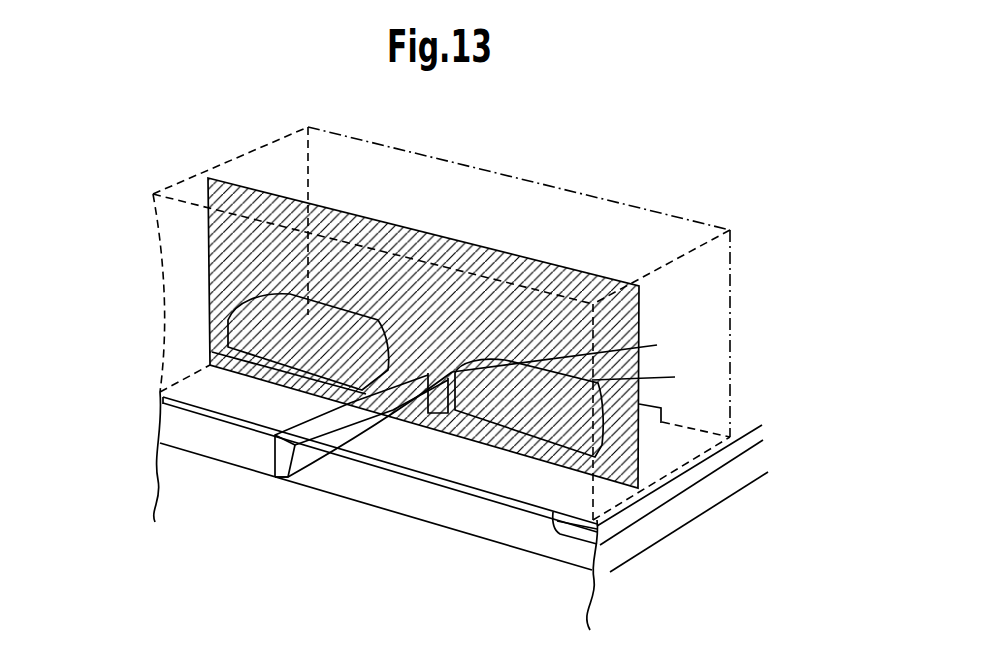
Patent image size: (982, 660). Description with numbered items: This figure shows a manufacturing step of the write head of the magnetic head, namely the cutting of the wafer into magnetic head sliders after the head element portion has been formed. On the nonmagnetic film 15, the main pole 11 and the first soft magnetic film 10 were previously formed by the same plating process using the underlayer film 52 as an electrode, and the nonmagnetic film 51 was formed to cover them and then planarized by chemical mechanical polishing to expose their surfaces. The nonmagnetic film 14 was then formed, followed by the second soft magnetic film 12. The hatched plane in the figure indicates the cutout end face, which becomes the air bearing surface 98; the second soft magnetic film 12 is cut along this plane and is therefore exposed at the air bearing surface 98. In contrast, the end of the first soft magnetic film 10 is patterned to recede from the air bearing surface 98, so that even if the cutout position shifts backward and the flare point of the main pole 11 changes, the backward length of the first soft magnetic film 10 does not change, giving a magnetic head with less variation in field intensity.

The first soft magnetic film 10 is at (237, 307).
The main pole 11 is at (283, 452).
The second soft magnetic film 12 is at (705, 300).
The nonmagnetic film 14 is at (597, 548).
The nonmagnetic film 15 is at (177, 485).
The nonmagnetic film 51 is at (187, 427).
The underlayer film 52 is at (277, 478).
The air bearing surface 98 is at (212, 213).